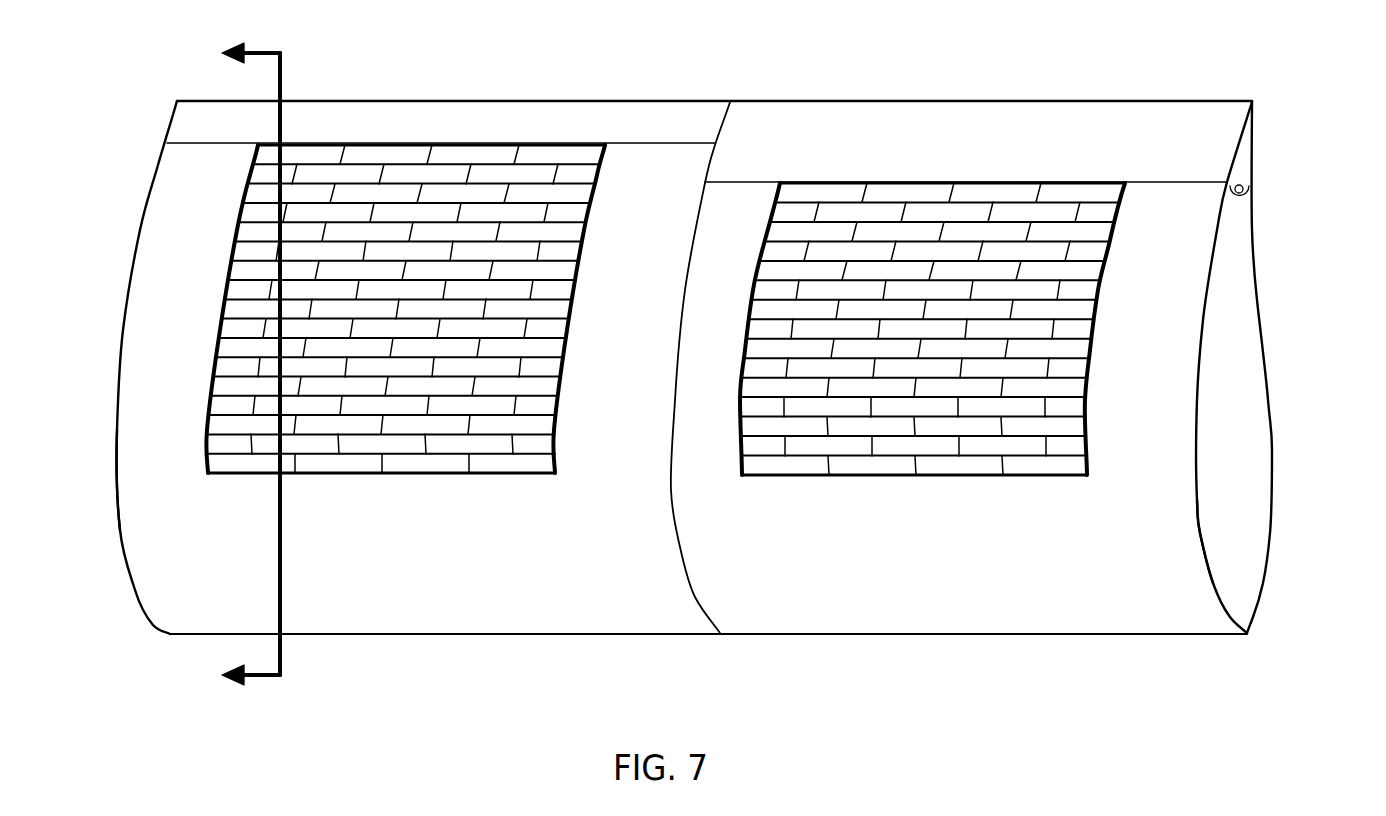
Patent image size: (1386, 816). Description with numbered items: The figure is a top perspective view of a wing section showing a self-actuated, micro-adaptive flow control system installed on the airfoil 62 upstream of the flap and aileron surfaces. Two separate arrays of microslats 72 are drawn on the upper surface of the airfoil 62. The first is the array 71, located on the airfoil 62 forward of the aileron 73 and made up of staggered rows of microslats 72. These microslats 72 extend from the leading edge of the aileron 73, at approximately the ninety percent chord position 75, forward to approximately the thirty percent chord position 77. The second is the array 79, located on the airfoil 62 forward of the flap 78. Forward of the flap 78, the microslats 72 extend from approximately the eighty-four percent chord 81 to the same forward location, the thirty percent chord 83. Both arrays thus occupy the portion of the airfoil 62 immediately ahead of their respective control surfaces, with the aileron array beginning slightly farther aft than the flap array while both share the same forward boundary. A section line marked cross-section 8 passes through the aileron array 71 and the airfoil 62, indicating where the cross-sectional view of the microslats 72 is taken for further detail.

The cross-section 8 is at (238, 364).
The airfoil 62 is at (1242, 363).
The array 71 is at (405, 410).
The microslats 72 is at (425, 475).
The aileron 73 is at (192, 117).
The 90% chord position 75 is at (182, 183).
The 30% chord position 77 is at (158, 492).
The flap 78 is at (1252, 125).
The array 79 is at (938, 525).
The 84% chord 81 is at (1215, 203).
The 30% chord 83 is at (1162, 498).